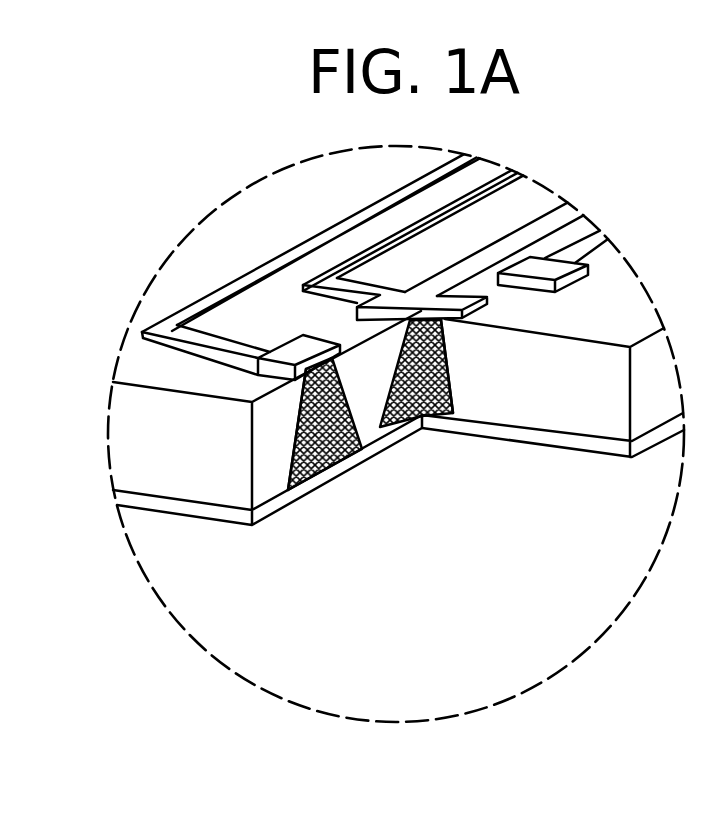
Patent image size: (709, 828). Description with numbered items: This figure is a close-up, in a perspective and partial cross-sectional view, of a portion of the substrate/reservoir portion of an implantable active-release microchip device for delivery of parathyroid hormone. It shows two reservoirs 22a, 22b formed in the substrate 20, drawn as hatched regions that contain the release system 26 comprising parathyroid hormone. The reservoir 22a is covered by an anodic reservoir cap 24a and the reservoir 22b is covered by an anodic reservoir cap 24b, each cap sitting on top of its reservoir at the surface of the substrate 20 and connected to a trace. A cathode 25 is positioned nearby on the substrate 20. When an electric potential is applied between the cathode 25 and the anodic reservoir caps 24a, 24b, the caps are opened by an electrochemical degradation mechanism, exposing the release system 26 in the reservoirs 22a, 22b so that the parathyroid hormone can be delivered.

The substrate 20 is at (228, 466).
The reservoir 22a is at (330, 466).
The reservoir 22b is at (421, 420).
The anodic reservoir cap 24a is at (298, 348).
The anodic reservoir cap 24b is at (430, 292).
The cathode 25 is at (585, 288).
The release system 26 is at (300, 430).